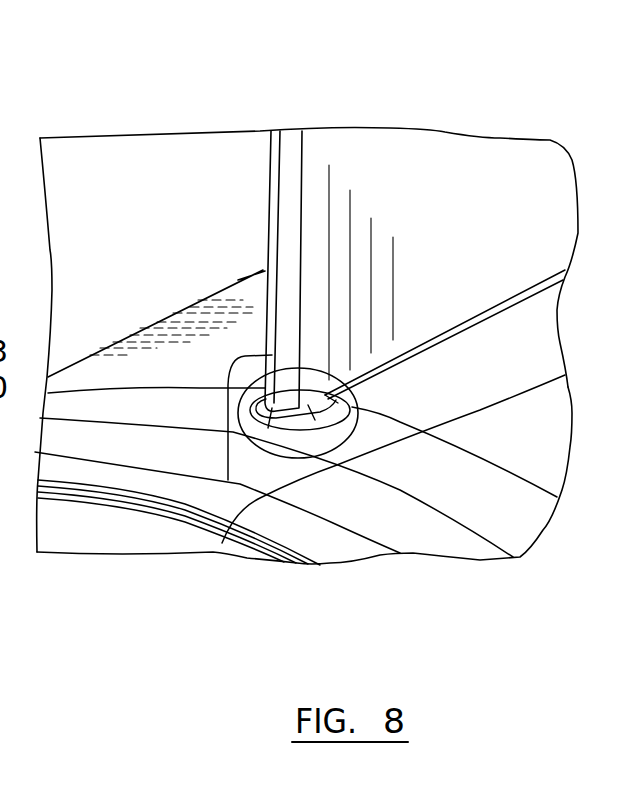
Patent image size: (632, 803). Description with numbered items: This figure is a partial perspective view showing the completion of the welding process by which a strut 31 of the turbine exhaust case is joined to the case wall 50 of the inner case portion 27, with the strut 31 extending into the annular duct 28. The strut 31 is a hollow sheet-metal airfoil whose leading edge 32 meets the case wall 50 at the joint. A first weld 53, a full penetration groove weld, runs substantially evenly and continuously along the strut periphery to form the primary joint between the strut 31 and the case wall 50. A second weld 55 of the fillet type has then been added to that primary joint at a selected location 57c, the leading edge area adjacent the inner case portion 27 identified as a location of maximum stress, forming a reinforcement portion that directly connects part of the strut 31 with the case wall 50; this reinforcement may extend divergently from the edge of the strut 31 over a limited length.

The inner case portion 27 is at (143, 480).
The annular duct 28 is at (87, 229).
The strut 31 is at (452, 167).
The leading edge 32 is at (228, 480).
The case wall 50 is at (457, 397).
The first weld 53 is at (503, 310).
The second weld 55 is at (288, 417).
The location of maximum stress 57c is at (350, 428).